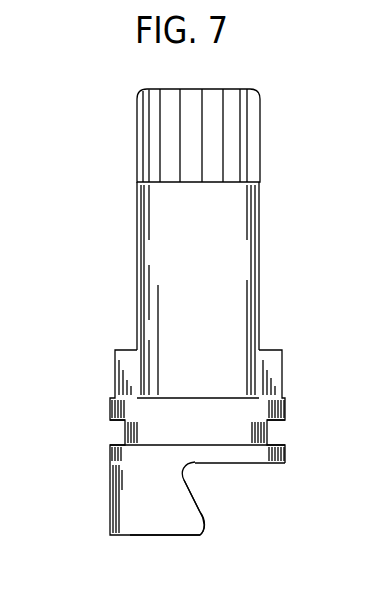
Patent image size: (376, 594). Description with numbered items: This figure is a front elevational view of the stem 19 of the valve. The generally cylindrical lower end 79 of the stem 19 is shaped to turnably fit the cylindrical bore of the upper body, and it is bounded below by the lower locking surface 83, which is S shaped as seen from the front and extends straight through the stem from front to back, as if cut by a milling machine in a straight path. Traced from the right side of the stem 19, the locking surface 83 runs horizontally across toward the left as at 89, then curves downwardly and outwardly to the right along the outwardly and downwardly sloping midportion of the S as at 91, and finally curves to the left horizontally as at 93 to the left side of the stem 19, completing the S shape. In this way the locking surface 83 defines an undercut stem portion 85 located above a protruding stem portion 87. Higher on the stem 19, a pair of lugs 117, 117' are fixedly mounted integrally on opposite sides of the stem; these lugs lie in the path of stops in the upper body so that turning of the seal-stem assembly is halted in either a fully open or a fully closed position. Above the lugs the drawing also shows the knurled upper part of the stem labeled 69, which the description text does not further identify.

The knurled cap 69 is at (247, 122).
The stem 19 is at (277, 204).
The lug 117 is at (92, 384).
The lug 117' is at (305, 385).
The undercut stem portion 85 is at (195, 477).
The horizontal upper part of locking surface 89 is at (262, 466).
The lower end 79 is at (138, 484).
The lower locking surface 83 is at (237, 483).
The sloping midportion of locking surface 91 is at (197, 503).
The protruding stem portion 87 is at (204, 534).
The horizontal lower part of locking surface 93 is at (148, 536).